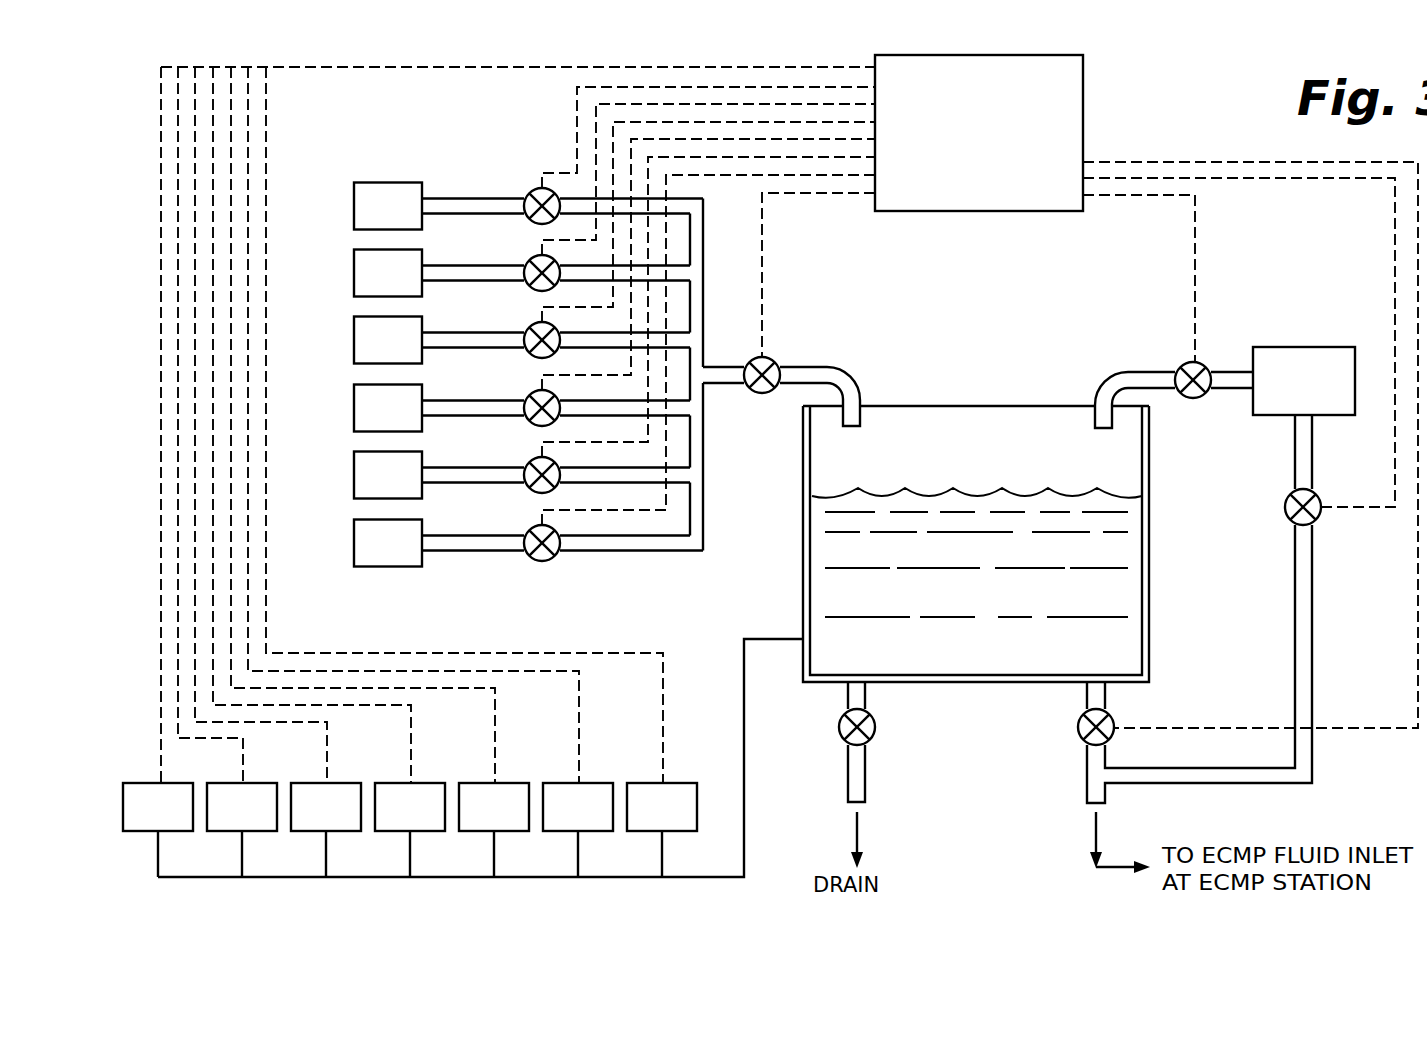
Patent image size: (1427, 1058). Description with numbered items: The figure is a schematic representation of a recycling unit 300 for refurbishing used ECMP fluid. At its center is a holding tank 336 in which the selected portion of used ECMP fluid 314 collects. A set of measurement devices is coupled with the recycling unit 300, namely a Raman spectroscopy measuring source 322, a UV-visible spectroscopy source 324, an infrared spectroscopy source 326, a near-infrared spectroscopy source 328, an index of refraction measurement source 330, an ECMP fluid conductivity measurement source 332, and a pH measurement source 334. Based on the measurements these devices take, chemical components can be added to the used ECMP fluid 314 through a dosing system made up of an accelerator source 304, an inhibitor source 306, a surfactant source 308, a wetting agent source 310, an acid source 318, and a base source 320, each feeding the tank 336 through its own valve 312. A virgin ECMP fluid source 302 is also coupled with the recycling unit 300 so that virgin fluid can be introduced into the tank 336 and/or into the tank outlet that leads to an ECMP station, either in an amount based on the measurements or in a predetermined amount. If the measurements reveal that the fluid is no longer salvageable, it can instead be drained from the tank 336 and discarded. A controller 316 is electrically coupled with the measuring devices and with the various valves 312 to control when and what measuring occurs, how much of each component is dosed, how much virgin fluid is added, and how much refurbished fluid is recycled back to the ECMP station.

The recycling unit 300 is at (1157, 130).
The virgin ECMP fluid source 302 is at (1280, 347).
The accelerator source 304 is at (369, 219).
The inhibitor source 306 is at (369, 286).
The surfactant source 308 is at (369, 353).
The wetting agent source 310 is at (369, 421).
The valves 312 is at (531, 220).
The selected portion of used ECMP fluid 314 is at (959, 605).
The controller 316 is at (958, 141).
The acid source 318 is at (369, 488).
The base source 320 is at (369, 556).
The Raman spectroscopy measuring source 322 is at (139, 820).
The UV-visible spectroscopy source 324 is at (223, 820).
The infrared spectroscopy source 326 is at (307, 820).
The near-infrared spectroscopy source 328 is at (391, 820).
The index of refraction measurement source 330 is at (475, 820).
The ECMP fluid conductivity measurement source 332 is at (559, 820).
The pH measurement source 334 is at (643, 820).
The holding tank 336 is at (1150, 575).